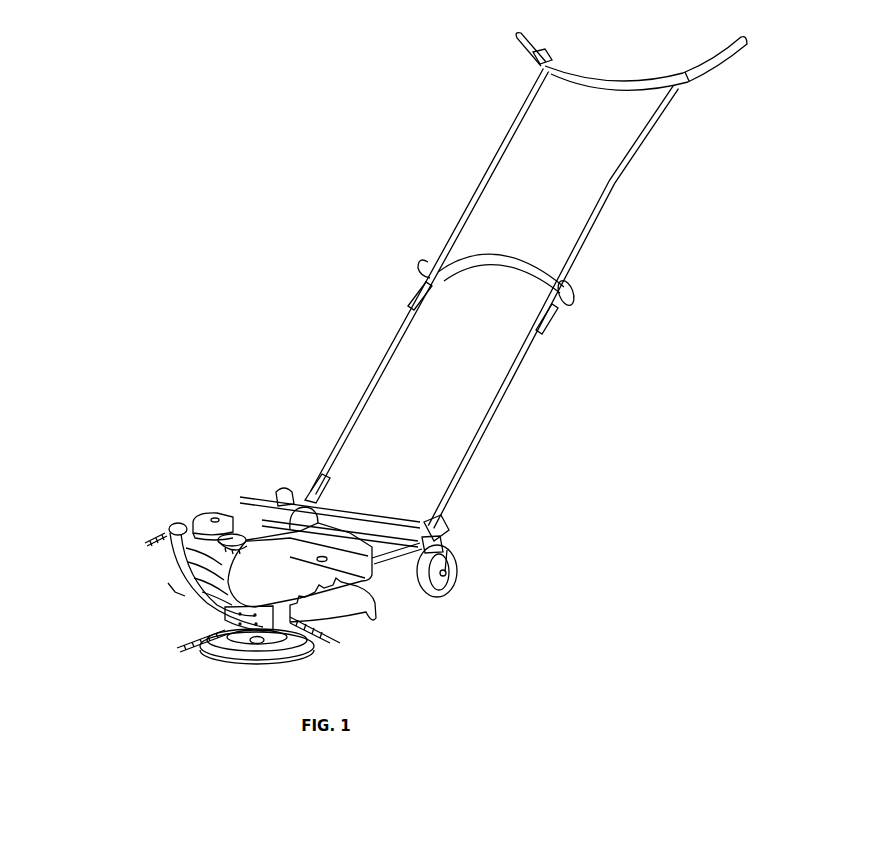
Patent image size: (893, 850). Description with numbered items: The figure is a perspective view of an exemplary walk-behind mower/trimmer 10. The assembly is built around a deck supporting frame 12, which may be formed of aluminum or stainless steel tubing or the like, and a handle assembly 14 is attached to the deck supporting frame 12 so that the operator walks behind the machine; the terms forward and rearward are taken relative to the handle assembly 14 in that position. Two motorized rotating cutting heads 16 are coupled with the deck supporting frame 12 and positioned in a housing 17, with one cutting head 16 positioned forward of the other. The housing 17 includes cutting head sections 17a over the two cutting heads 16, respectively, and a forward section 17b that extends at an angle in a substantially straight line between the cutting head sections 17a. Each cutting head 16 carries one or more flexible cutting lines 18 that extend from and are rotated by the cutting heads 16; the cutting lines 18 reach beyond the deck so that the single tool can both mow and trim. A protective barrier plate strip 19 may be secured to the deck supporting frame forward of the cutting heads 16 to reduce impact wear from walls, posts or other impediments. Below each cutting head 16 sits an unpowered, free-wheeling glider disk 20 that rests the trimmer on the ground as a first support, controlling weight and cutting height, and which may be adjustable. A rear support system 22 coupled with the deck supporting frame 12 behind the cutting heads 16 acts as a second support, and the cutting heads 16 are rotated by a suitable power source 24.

The walk-behind mower/trimmer 10 is at (338, 194).
The deck supporting frame 12 is at (467, 512).
The handle assembly 14 is at (620, 240).
The motorized rotating cutting heads 16 is at (157, 602).
The housing 17 is at (327, 558).
The cutting head sections 17a is at (240, 586).
The forward section 17b is at (183, 524).
The flexible cutting lines 18 is at (153, 540).
The protective barrier plate strip 19 is at (183, 590).
The glider disk 20 is at (222, 657).
The rear support system 22 is at (478, 580).
The power source 24 is at (212, 497).